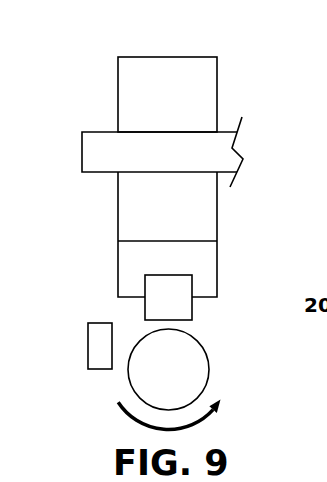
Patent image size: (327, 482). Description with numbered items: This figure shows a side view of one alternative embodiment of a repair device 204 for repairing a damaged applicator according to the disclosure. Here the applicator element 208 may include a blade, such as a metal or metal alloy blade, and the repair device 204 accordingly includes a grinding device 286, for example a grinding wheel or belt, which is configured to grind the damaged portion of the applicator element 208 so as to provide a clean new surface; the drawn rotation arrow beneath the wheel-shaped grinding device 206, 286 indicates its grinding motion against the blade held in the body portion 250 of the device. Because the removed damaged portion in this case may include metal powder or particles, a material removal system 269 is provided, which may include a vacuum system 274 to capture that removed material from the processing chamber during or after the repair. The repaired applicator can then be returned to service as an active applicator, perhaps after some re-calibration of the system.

The repair device 204 is at (181, 162).
The lower body portion 250 is at (142, 254).
The applicator element 208 is at (158, 307).
The material removal system 269 is at (59, 362).
The vacuum system 274 is at (92, 351).
The roller 206 is at (217, 369).
The grinding device 286 is at (168, 369).